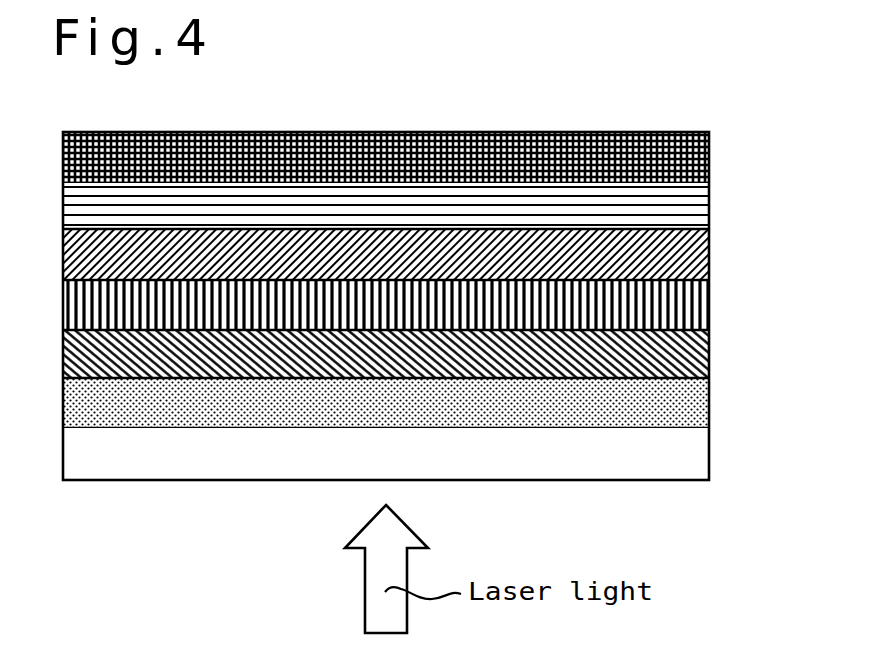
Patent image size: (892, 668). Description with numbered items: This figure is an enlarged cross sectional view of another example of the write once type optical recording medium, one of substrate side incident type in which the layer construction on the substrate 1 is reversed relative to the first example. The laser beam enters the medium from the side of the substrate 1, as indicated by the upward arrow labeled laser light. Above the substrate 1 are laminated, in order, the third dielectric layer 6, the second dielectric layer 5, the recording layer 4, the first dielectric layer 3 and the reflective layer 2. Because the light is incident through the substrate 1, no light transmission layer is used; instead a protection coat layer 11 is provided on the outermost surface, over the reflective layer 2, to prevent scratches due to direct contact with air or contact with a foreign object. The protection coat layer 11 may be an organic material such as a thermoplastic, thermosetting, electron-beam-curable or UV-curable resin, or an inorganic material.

The protection coat layer 11 is at (703, 144).
The reflective layer 2 is at (692, 201).
The first dielectric layer 3 is at (688, 254).
The recording layer 4 is at (683, 304).
The second dielectric layer 5 is at (683, 353).
The third dielectric layer 6 is at (686, 401).
The substrate 1 is at (683, 454).